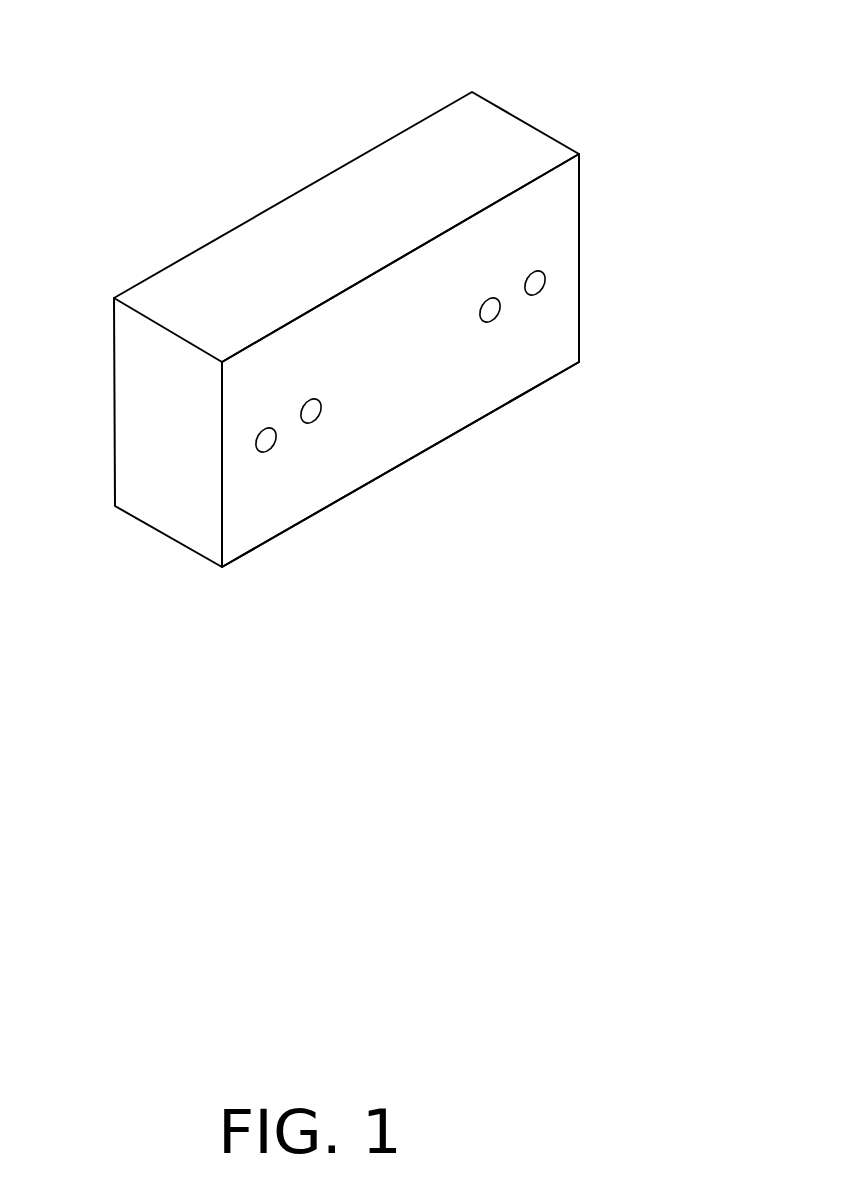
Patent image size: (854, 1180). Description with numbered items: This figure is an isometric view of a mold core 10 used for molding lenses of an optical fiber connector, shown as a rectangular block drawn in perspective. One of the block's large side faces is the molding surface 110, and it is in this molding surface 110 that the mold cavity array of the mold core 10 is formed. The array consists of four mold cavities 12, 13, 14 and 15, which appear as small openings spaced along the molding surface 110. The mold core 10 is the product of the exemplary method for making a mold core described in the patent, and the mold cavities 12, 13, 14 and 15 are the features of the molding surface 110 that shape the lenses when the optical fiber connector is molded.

The mold core 10 is at (205, 75).
The molding surface 110 is at (552, 198).
The mold cavity 12 is at (314, 414).
The mold cavity 13 is at (493, 316).
The mold cavity 14 is at (268, 445).
The mold cavity 15 is at (540, 287).